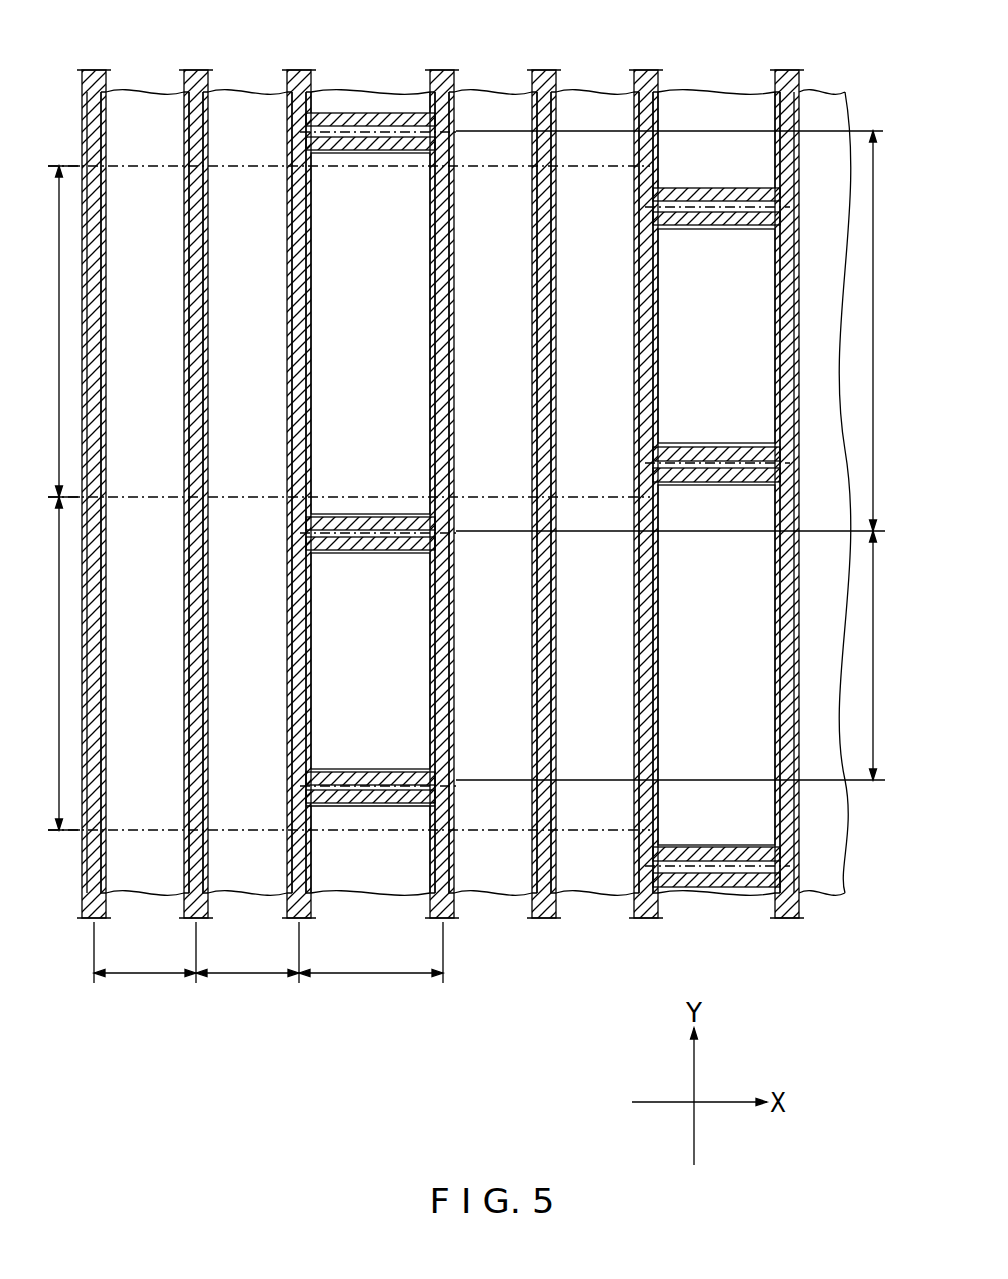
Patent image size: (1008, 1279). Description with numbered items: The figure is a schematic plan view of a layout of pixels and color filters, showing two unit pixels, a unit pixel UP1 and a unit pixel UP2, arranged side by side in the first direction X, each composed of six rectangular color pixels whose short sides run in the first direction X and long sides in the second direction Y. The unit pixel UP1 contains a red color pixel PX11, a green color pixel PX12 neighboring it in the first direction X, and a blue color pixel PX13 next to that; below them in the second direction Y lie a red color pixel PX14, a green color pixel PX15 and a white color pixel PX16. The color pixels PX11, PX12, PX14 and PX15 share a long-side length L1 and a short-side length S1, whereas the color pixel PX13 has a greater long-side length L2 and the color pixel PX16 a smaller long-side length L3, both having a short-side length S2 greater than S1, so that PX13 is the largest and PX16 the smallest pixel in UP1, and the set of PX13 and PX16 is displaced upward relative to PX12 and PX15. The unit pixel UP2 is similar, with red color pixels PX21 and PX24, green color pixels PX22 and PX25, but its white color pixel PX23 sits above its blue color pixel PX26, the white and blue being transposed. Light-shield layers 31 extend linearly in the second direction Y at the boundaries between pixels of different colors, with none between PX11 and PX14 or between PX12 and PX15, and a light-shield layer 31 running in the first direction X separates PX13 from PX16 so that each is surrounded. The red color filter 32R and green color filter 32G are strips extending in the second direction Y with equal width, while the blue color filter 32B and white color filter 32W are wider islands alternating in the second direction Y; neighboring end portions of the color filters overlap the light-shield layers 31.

The light-shield layer 31 is at (95, 67).
The first color filter 32R is at (143, 103).
The second color filter 32G is at (244, 103).
The third color filter 32B is at (347, 130).
The fourth color filter 32W is at (396, 101).
The first color pixel PX11 is at (147, 331).
The second color pixel PX12 is at (250, 331).
The third color pixel PX13 is at (370, 333).
The fourth color pixel PX14 is at (147, 664).
The fifth color pixel PX15 is at (250, 664).
The sixth color pixel PX16 is at (370, 661).
The color pixel PX21 is at (495, 331).
The color pixel PX22 is at (597, 331).
The color pixel PX23 is at (716, 336).
The color pixel PX24 is at (495, 664).
The color pixel PX25 is at (597, 664).
The color pixel PX26 is at (716, 665).
The long-side length L1 is at (340, 498).
The long-side length L2 is at (678, 331).
The long-side length L3 is at (678, 655).
The short-side length S1 is at (196, 964).
The short-side length S2 is at (371, 964).
The unit pixel UP1 is at (86, 826).
The unit pixel UP2 is at (800, 264).